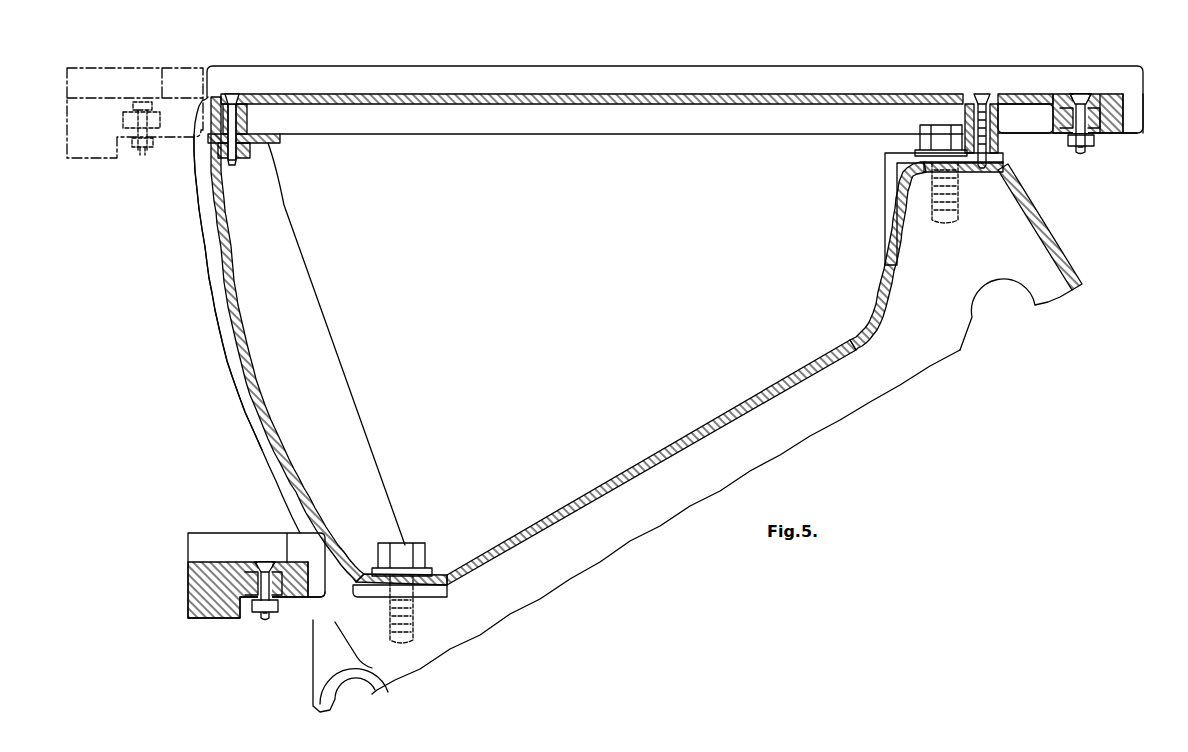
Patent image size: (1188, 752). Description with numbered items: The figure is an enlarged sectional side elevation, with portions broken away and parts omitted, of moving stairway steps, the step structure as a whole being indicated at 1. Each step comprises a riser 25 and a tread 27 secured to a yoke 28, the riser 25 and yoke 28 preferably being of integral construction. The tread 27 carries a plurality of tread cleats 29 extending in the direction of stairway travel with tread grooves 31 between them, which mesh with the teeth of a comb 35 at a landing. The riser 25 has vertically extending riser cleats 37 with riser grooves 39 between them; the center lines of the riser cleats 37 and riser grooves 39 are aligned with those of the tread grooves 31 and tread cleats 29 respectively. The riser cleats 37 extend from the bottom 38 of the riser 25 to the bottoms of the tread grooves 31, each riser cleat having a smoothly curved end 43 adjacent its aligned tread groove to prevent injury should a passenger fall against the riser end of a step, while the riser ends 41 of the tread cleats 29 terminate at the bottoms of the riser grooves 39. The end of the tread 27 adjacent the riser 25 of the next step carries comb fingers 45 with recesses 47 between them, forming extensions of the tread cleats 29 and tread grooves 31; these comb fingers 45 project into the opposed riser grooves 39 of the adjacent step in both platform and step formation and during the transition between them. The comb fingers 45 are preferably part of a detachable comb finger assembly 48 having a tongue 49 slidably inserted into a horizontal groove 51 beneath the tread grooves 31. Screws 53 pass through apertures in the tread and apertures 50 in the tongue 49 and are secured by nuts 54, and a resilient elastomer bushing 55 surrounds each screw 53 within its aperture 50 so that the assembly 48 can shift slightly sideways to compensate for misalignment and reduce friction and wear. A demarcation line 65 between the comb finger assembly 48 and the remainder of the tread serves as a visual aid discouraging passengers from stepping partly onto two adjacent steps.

The enclosure assembly 1 is at (666, 66).
The riser 25 is at (238, 389).
The tread 27 is at (576, 66).
The yoke 28 is at (333, 330).
The tread cleats 29 is at (737, 82).
The tread grooves 31 is at (391, 99).
The comb 35 is at (944, 195).
The riser cleats 37 is at (212, 293).
The bottom of the riser 38 is at (347, 588).
The riser grooves 39 is at (212, 246).
The riser ends of the tread cleats 41 is at (209, 75).
The curved end 43 is at (198, 105).
The comb fingers 45 is at (1135, 68).
The recesses 47 is at (1143, 125).
The comb finger assembly 48 is at (1180, 102).
The tongue 49 is at (1105, 137).
The apertures 50 is at (1067, 93).
The horizontal groove 51 is at (1053, 116).
The screws 53 is at (1082, 153).
The nuts 54 is at (1090, 140).
The bushing 55 is at (1060, 128).
The demarcation line 65 is at (1100, 95).